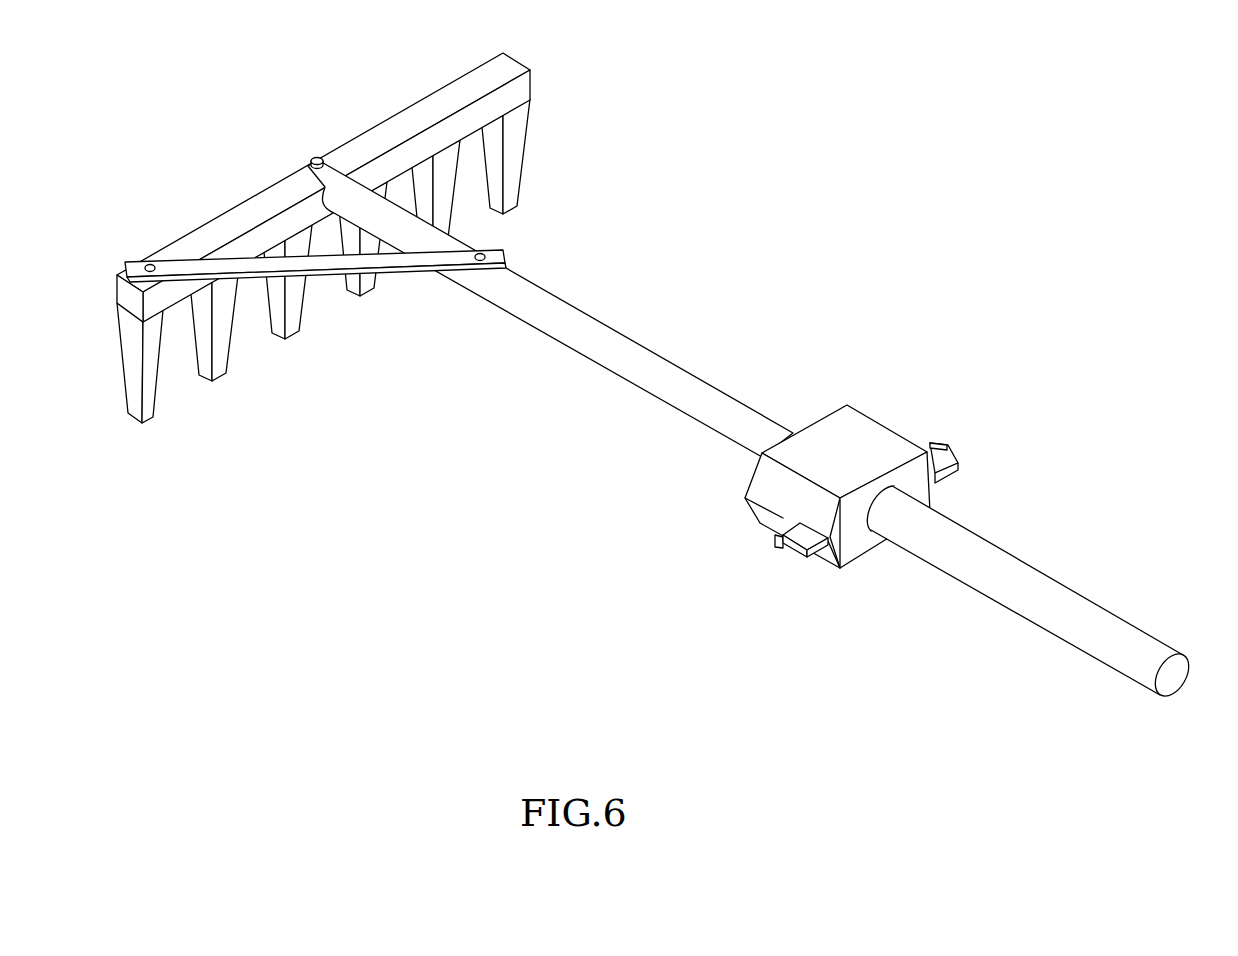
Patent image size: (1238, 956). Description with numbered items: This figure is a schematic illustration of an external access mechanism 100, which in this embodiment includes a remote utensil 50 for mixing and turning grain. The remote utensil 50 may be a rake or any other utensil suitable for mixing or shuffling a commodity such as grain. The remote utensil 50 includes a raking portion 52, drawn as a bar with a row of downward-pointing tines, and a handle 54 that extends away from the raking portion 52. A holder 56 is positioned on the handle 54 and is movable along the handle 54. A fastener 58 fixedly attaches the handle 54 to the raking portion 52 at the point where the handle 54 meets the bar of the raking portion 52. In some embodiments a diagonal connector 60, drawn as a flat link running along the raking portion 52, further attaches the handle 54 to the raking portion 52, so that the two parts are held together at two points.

The raking portion 52 is at (447, 93).
The handle 54 is at (615, 330).
The holder 56 is at (858, 428).
The fastener 58 is at (313, 160).
The diagonal connector 60 is at (323, 272).
The external access mechanism 100 is at (656, 375).
The remote utensil 50 is at (656, 375).